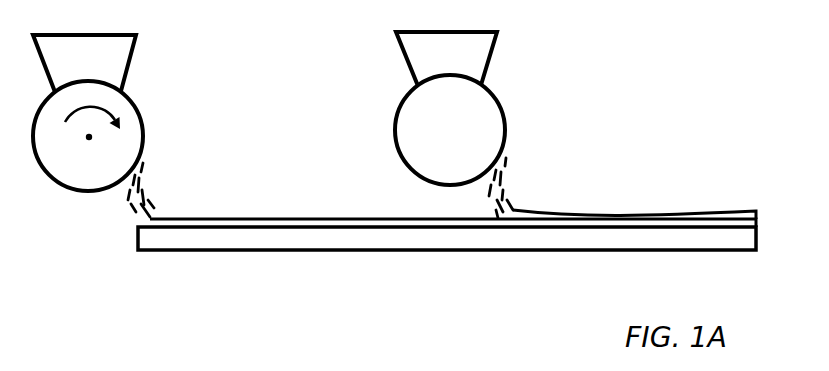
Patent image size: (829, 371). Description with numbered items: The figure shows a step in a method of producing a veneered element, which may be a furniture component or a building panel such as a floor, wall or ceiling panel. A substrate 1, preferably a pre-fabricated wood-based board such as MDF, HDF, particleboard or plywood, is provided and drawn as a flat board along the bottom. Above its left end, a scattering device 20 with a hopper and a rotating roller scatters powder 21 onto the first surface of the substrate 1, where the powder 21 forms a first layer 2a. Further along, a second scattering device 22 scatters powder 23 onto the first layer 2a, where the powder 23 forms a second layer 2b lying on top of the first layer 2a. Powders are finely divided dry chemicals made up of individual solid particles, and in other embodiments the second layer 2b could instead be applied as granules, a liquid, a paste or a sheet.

The substrate 1 is at (205, 242).
The first layer 2a is at (238, 225).
The second layer 2b is at (643, 219).
The scattering device 20 is at (143, 121).
The powder 21 is at (133, 206).
The scattering device 22 is at (505, 113).
The powder 23 is at (507, 186).